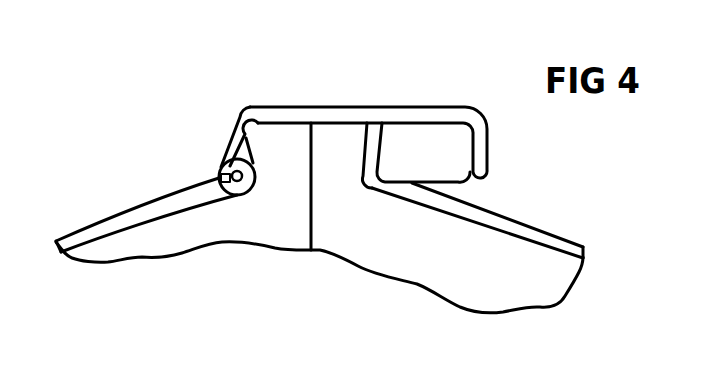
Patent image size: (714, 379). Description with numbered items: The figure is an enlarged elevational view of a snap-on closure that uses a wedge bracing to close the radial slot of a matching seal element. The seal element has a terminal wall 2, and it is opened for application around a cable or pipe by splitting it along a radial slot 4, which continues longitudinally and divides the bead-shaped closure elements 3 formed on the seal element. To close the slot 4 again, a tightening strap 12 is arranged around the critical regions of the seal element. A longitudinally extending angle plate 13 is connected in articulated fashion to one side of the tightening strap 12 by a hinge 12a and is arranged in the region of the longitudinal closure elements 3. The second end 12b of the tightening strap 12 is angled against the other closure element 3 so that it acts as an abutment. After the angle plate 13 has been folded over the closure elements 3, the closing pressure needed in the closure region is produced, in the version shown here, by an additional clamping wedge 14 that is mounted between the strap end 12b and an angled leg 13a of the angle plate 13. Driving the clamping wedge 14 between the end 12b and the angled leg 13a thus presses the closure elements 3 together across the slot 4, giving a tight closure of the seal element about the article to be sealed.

The terminal wall 2 is at (513, 297).
The bead-shaped closure elements 3 is at (283, 138).
The radial slot 4 is at (313, 172).
The tightening strap 12 is at (146, 210).
The hinge 12a is at (220, 172).
The second end of the tightening strap 12b is at (384, 145).
The angle plate 13 is at (362, 118).
The angled leg 13a is at (476, 178).
The clamping wedge 14 is at (458, 143).